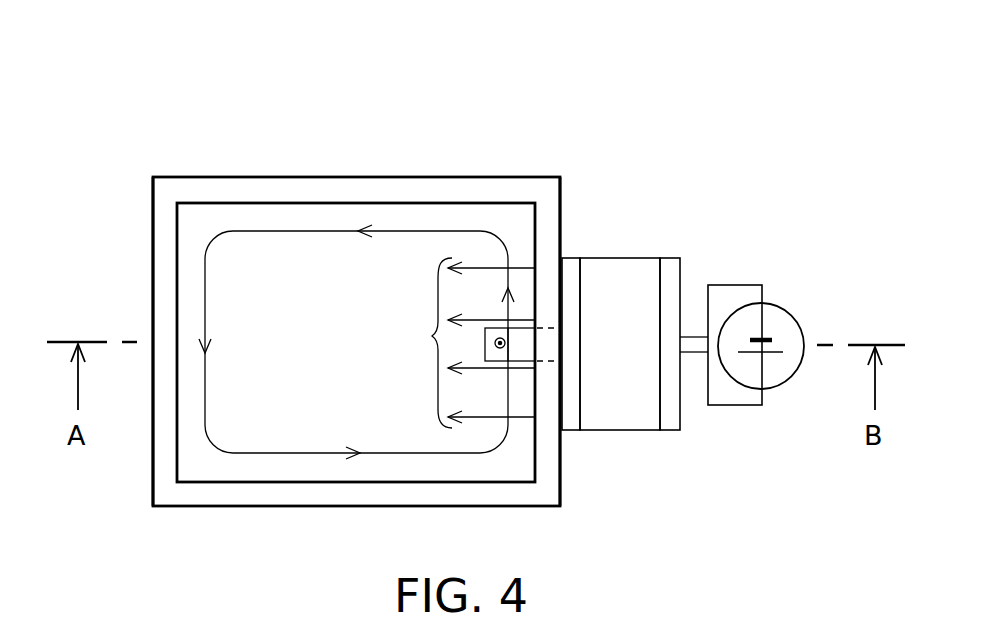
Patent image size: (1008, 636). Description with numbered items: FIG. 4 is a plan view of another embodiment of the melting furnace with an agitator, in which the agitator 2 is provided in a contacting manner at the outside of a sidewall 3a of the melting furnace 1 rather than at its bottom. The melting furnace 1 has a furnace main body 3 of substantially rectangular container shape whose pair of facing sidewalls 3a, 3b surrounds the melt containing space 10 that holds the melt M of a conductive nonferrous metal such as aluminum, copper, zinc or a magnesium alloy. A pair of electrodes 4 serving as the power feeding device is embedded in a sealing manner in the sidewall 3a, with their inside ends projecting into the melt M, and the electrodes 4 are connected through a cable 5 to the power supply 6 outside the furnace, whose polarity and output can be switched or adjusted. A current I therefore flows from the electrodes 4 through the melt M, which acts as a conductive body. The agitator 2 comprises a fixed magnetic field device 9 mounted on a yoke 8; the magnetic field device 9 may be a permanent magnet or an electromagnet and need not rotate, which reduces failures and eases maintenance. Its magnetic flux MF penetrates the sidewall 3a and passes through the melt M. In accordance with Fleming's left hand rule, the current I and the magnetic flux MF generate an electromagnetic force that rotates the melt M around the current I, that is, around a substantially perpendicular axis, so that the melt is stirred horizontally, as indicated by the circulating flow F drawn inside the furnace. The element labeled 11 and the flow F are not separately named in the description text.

The melting furnace 1 is at (395, 128).
The agitator 2 is at (664, 145).
The furnace main body 3 is at (466, 177).
The sidewall 3a is at (545, 220).
The sidewall 3b is at (158, 243).
The electrode 4 is at (485, 343).
The cable 5 is at (735, 285).
The power supply 6 is at (800, 325).
The yoke 8 is at (672, 418).
The magnetic field device 9 is at (572, 258).
The melt containing space 10 is at (284, 204).
The motor 11 is at (620, 258).
The fluid flow F is at (205, 358).
The melt M is at (305, 422).
The magnetic flux MF is at (432, 336).
The current I is at (496, 352).